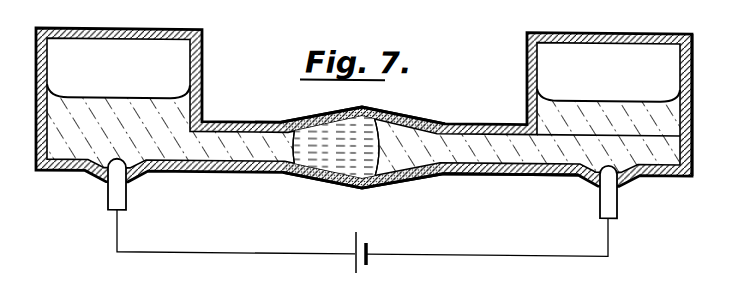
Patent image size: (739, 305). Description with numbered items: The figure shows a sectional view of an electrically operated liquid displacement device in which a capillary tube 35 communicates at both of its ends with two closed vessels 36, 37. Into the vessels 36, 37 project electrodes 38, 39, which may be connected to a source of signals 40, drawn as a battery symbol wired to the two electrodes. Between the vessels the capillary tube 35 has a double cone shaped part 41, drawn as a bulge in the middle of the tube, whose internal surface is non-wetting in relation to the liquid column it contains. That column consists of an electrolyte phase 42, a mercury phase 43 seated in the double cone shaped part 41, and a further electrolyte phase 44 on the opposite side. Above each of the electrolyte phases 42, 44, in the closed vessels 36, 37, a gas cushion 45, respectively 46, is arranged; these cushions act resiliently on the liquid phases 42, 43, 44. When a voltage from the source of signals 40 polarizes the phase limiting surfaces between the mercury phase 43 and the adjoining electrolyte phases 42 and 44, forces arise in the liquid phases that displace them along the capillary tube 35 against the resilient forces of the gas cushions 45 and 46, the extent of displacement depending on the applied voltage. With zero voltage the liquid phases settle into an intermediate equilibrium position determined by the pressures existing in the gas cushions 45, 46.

The capillary tube 35 is at (482, 168).
The closed vessel 36 is at (694, 44).
The closed vessel 37 is at (35, 52).
The electrode 38 is at (612, 200).
The electrode 39 is at (108, 199).
The source of signals 40 is at (358, 265).
The double cone shaped part 41 is at (304, 172).
The electrolyte phase 42 is at (218, 148).
The mercury phase 43 is at (343, 160).
The further electrolyte phase 44 is at (565, 147).
The gas cushion 45 is at (624, 50).
The gas cushion 46 is at (120, 47).